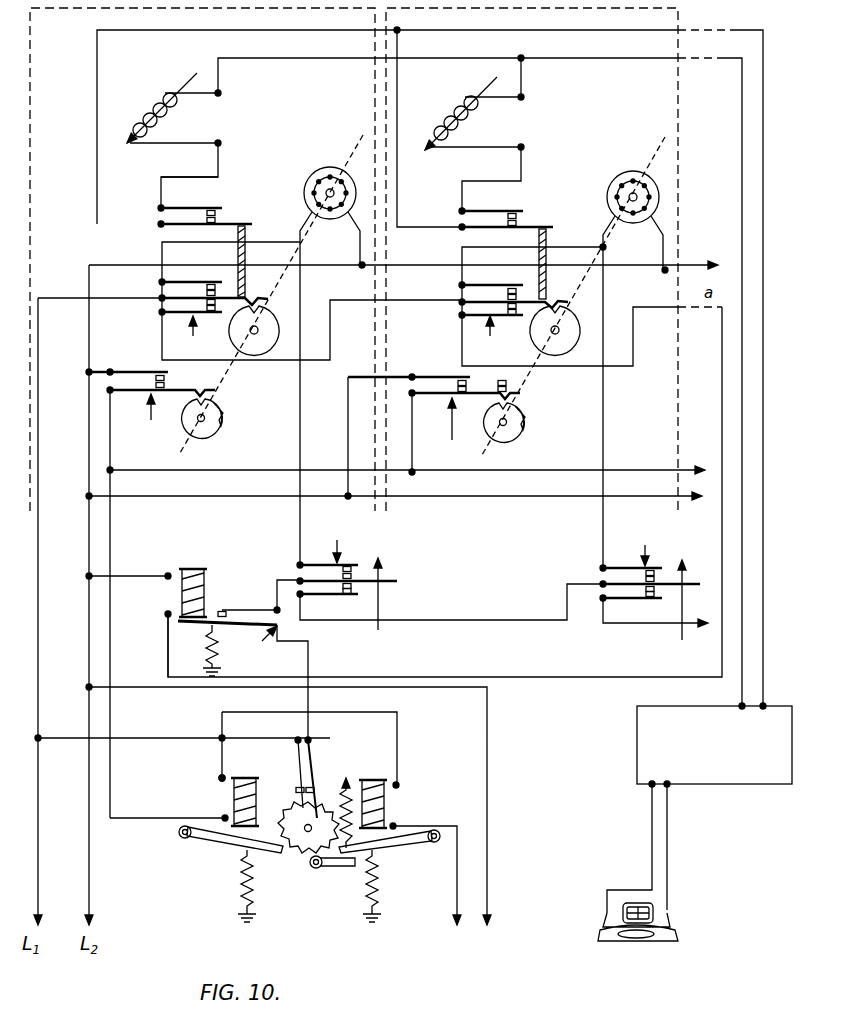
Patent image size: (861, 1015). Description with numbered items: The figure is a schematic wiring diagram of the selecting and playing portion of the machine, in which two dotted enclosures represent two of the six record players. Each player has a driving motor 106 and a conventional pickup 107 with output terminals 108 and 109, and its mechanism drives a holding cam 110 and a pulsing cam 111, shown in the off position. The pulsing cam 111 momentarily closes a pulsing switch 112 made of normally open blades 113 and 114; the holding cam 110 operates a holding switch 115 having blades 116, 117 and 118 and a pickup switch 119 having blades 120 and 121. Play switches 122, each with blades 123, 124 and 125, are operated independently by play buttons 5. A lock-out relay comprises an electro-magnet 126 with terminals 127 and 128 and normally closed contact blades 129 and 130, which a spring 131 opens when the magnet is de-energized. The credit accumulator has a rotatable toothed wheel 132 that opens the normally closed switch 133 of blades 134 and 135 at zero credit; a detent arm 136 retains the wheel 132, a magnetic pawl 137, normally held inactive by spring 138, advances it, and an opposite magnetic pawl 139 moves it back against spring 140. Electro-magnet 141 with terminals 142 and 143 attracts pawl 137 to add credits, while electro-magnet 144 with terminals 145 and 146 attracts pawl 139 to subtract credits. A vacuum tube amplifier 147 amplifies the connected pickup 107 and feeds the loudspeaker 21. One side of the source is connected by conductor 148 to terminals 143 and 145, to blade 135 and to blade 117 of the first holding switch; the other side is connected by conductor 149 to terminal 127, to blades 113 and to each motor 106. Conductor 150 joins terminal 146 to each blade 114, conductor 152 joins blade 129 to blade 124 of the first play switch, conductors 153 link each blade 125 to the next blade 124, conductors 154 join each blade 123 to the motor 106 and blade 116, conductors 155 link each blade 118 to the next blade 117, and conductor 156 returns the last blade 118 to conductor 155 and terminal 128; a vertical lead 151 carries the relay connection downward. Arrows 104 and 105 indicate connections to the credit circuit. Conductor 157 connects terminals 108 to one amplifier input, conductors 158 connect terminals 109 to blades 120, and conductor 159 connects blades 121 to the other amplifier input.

The play buttons 5 is at (530, 602).
The loudspeaker 21 is at (662, 930).
The conductor 104 is at (450, 950).
The conductor 105 is at (492, 950).
The driving motor 106 is at (322, 170).
The pickup 107 is at (165, 100).
The output terminal 108 is at (222, 94).
The output terminal 109 is at (220, 143).
The holding cam 110 is at (258, 354).
The pulsing cam 111 is at (215, 430).
The pulsing switch 112 is at (303, 422).
The blade 113 is at (108, 372).
The blade 114 is at (108, 392).
The holding switch 115 is at (343, 336).
The blade 116 is at (160, 281).
The blade 117 is at (160, 297).
The blade 118 is at (160, 312).
The pickup switch 119 is at (235, 222).
The blade 120 is at (160, 207).
The blade 121 is at (160, 223).
The play switch 122 is at (493, 543).
The blade 123 is at (298, 563).
The blade 124 is at (298, 580).
The blade 125 is at (302, 597).
The electro-magnet 126 is at (193, 566).
The terminal 127 is at (168, 576).
The terminal 128 is at (166, 616).
The contact blade 129 is at (275, 608).
The contact blade 130 is at (229, 633).
The spring 131 is at (210, 640).
The toothed wheel 132 is at (298, 806).
The switch 133 is at (320, 758).
The blade 134 is at (310, 740).
The blade 135 is at (297, 738).
The detent arm 136 is at (335, 870).
The magnetic pawl 137 is at (395, 855).
The spring 138 is at (382, 885).
The magnetic pawl 139 is at (225, 850).
The spring 140 is at (238, 888).
The electro-magnet 141 is at (388, 800).
The terminal 142 is at (393, 825).
The terminal 143 is at (397, 783).
The electro-magnet 144 is at (234, 800).
The terminal 145 is at (224, 778).
The terminal 146 is at (228, 812).
The vacuum tube amplifier 147 is at (714, 745).
The conductor 148 is at (59, 298).
The conductor 149 is at (403, 265).
The conductor 150 is at (238, 470).
The conductor 151 is at (308, 665).
The conductor 152 is at (276, 580).
The conductor 153 is at (445, 622).
The conductor 154 is at (178, 246).
The conductor 155 is at (330, 325).
The conductor 156 is at (722, 430).
The conductor 157 is at (290, 58).
The conductor 158 is at (218, 175).
The conductor 159 is at (97, 148).